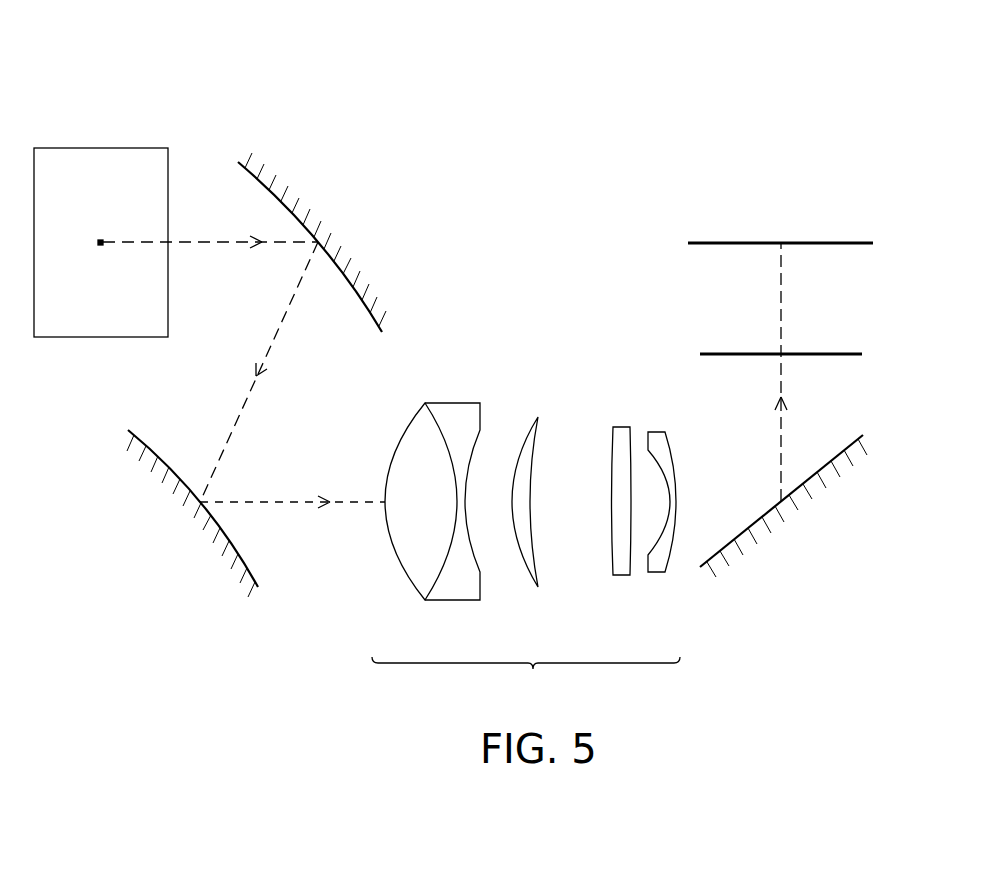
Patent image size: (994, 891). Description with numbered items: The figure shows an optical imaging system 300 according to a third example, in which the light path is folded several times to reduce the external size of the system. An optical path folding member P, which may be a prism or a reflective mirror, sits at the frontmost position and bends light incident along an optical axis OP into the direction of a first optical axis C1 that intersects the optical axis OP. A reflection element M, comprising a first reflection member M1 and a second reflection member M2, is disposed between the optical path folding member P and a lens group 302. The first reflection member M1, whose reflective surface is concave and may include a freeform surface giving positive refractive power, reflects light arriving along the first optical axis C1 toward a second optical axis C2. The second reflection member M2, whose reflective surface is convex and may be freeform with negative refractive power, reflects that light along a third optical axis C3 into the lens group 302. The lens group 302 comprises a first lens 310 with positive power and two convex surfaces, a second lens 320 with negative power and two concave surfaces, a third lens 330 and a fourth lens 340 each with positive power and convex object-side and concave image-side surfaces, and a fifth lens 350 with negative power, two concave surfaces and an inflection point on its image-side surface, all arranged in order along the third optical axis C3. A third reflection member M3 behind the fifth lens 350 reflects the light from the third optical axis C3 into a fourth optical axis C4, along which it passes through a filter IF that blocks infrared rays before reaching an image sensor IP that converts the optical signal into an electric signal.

The optical path folding member P is at (142, 148).
The optical axis OP is at (100, 244).
The first optical axis C1 is at (195, 242).
The second optical axis C2 is at (278, 324).
The third optical axis C3 is at (262, 502).
The fourth optical axis C4 is at (781, 440).
The reflection element M is at (626, 15).
The first reflection member M1 is at (253, 178).
The second reflection member M2 is at (147, 443).
The third reflection member M3 is at (862, 437).
The image sensor IP is at (847, 243).
The filter IF is at (843, 354).
The optical imaging system 300 is at (530, 315).
The lens group 302 is at (526, 679).
The first lens 310 is at (412, 587).
The second lens 320 is at (455, 600).
The third lens 330 is at (528, 577).
The fourth lens 340 is at (608, 575).
The fifth lens 350 is at (655, 572).